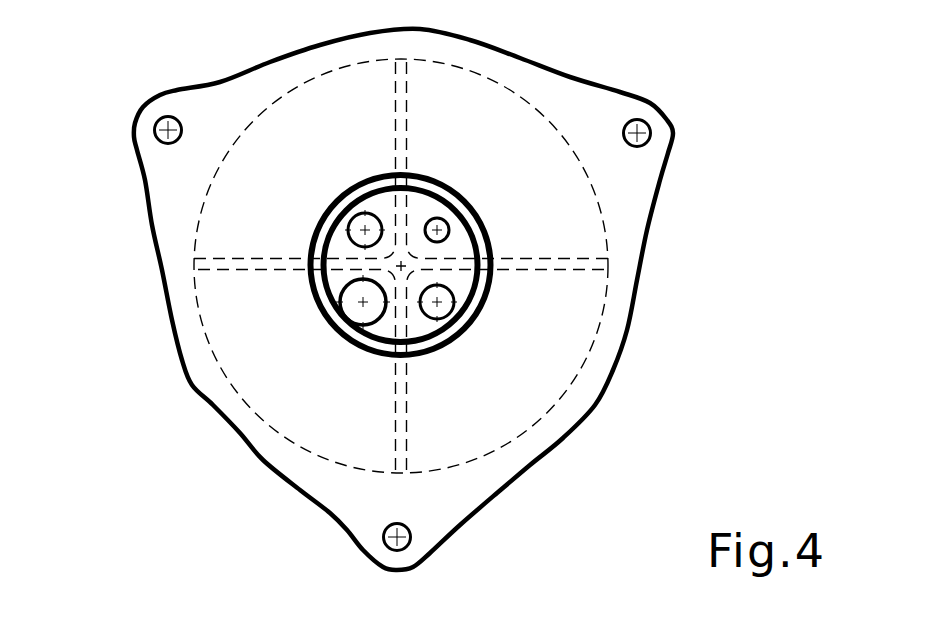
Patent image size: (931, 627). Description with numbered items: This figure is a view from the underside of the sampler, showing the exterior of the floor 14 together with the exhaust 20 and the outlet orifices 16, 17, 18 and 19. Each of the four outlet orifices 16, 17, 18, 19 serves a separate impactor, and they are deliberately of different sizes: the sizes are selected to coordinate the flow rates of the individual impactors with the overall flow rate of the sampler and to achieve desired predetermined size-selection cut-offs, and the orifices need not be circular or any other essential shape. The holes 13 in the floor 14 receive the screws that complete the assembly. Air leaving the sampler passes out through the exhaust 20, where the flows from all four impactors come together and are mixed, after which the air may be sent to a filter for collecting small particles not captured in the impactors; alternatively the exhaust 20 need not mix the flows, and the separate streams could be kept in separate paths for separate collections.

The holes 13 is at (163, 116).
The floor 14 is at (510, 405).
The outlet orifice 16 is at (455, 313).
The outlet orifice 17 is at (356, 313).
The outlet orifice 18 is at (447, 222).
The outlet orifice 19 is at (350, 221).
The exhaust 20 is at (365, 345).